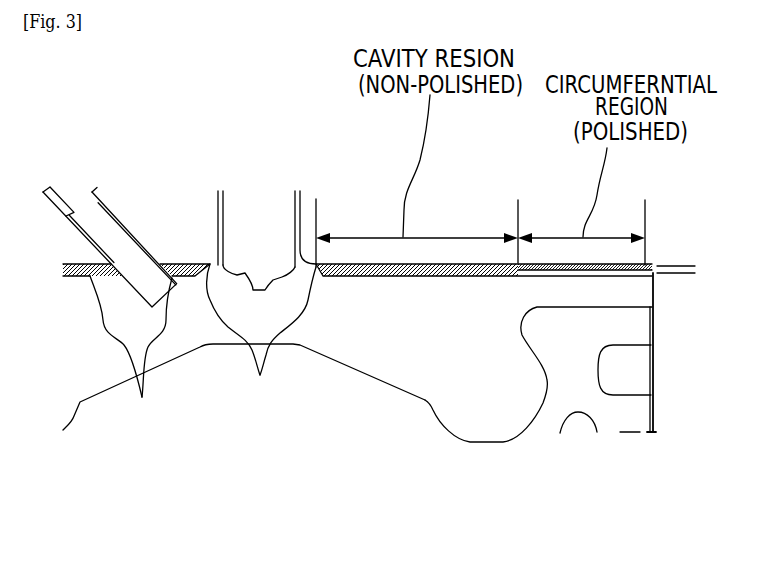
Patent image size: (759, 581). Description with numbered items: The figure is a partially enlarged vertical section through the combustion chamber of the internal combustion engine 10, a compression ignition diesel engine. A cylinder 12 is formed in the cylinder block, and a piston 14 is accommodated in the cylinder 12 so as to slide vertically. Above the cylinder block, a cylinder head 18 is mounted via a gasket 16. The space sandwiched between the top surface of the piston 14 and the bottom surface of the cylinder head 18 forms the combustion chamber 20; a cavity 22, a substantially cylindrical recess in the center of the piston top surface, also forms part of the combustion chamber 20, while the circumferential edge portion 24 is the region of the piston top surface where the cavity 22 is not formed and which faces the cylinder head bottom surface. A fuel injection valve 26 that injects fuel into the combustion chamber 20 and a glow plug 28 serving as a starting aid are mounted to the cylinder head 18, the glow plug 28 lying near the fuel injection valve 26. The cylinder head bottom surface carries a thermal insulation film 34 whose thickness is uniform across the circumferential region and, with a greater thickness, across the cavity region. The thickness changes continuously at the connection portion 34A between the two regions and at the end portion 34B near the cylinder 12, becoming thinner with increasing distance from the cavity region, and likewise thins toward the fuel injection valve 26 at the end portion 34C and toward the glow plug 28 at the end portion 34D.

The internal combustion engine 10 is at (599, 548).
The cylinder 12 is at (648, 298).
The piston 14 is at (481, 488).
The gasket 16 is at (651, 265).
The cylinder head 18 is at (347, 275).
The combustion chamber 20 is at (348, 343).
The cavity 22 is at (396, 388).
The circumferential edge portion 24 is at (555, 307).
The fuel injection valve 26 is at (228, 284).
The glow plug 28 is at (115, 209).
The thermal insulation film 34 is at (473, 275).
The connection portion 34A is at (525, 270).
The end portion 34B is at (652, 267).
The end portion 34C is at (261, 333).
The end portion 34D is at (136, 345).